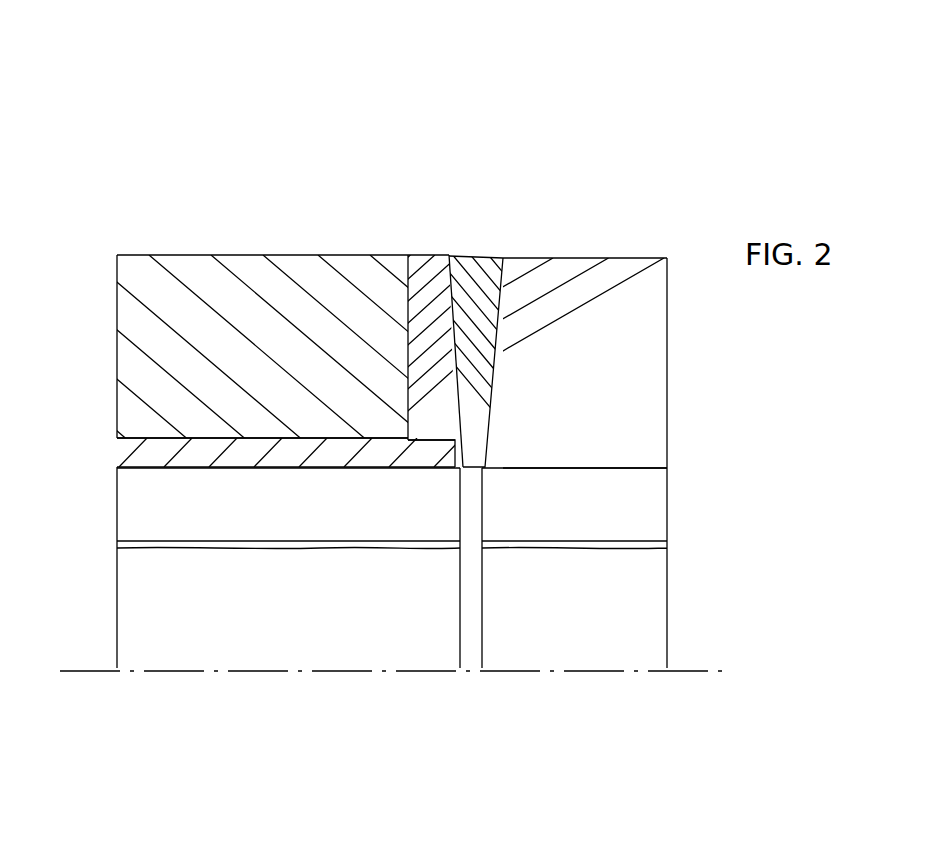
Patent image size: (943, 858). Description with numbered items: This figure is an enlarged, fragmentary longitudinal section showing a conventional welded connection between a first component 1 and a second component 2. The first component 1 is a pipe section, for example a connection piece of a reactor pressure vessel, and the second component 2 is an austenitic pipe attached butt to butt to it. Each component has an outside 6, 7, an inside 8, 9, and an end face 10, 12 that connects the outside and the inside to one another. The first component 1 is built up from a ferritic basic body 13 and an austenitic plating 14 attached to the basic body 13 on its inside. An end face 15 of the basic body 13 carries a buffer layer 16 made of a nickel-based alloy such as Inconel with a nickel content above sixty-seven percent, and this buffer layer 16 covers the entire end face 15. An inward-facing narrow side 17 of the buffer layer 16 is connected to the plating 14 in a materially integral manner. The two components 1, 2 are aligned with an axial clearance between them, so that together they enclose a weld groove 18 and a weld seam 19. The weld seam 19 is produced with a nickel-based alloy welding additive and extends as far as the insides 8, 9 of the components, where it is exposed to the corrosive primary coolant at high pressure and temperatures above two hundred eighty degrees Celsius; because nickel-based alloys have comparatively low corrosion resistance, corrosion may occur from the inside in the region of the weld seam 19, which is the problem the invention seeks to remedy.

The first component 1 is at (244, 278).
The second component 2 is at (585, 288).
The outside 6 is at (181, 255).
The outside 7 is at (556, 256).
The inside 8 is at (215, 468).
The inside 9 is at (583, 468).
The end face 10 is at (448, 286).
The end face 12 is at (377, 468).
The basic body 13 is at (320, 287).
The plating 14 is at (134, 468).
The end face 15 is at (430, 289).
The buffer layer 16 is at (425, 347).
The narrow side 17 is at (452, 432).
The weld groove 18 is at (476, 300).
The weld seam 19 is at (469, 246).